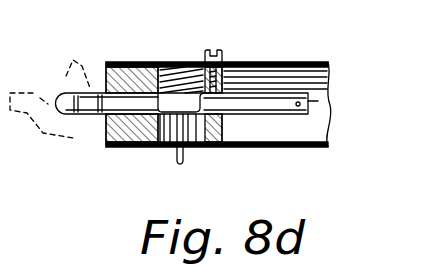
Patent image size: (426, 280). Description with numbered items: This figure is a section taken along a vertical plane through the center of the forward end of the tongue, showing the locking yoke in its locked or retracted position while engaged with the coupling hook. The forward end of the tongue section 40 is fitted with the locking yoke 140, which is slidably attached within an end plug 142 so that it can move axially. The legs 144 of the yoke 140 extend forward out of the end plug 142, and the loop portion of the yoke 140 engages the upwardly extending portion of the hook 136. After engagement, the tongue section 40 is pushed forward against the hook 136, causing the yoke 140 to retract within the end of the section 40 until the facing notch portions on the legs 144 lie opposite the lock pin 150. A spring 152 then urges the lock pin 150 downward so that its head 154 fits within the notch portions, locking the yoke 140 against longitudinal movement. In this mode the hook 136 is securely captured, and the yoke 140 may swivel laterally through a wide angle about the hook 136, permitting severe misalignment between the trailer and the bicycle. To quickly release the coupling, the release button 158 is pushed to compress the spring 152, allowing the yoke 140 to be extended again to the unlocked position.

The tongue section 40 is at (262, 62).
The hook 136 is at (86, 52).
The locking yoke 140 is at (90, 118).
The end plug 142 is at (128, 76).
The legs of the yoke 144 is at (257, 108).
The lock pin 150 is at (163, 136).
The spring 152 is at (183, 68).
The head of the lock pin 154 is at (212, 146).
The release button 158 is at (183, 164).